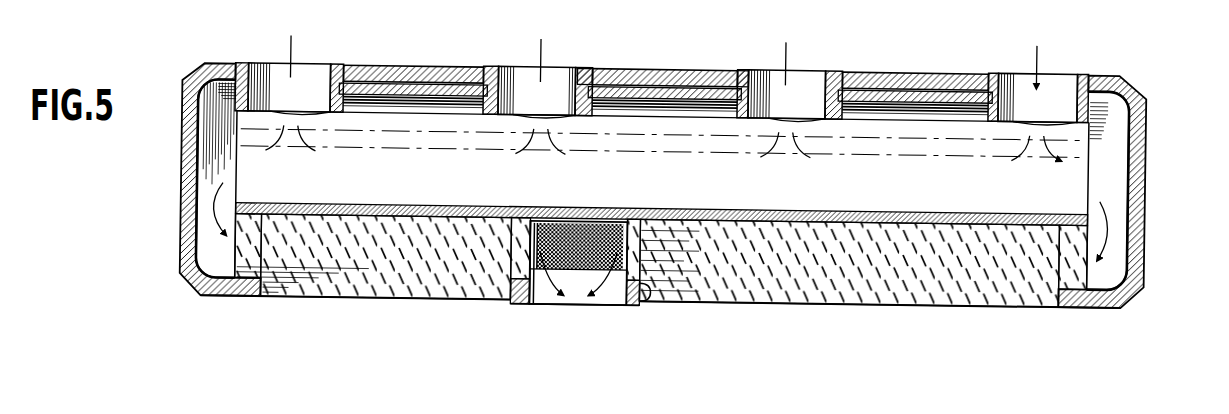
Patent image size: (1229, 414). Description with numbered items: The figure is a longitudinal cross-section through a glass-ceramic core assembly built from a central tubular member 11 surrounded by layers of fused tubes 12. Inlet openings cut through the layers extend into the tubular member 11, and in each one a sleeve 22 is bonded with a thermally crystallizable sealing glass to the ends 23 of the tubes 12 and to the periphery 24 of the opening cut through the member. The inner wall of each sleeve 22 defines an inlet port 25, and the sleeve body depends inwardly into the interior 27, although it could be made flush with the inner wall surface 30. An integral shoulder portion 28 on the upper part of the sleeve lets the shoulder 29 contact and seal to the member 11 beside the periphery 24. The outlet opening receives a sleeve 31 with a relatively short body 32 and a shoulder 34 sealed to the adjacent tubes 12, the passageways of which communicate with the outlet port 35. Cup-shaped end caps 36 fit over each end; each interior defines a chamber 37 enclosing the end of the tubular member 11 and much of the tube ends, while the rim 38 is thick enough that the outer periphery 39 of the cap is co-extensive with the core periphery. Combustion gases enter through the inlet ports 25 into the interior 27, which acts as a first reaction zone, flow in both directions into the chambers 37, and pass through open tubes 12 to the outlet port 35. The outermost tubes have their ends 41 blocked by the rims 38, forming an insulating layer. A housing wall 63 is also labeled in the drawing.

The tubular member 11 is at (423, 99).
The tubes 12 is at (826, 284).
The sleeve 22 is at (243, 69).
The ends of the tubes 23 is at (479, 72).
The periphery of the opening 24 is at (343, 102).
The inlet port 25 is at (315, 77).
The interior of tubular member 27 is at (361, 189).
The shoulder portion 28 is at (588, 80).
The shoulder 29 is at (482, 106).
The inner wall surface 30 is at (1073, 149).
The sleeve 31 is at (588, 305).
The body 32 is at (623, 293).
The shoulder 34 is at (647, 285).
The outlet port 35 is at (552, 291).
The end caps 36 is at (185, 170).
The chamber 37 is at (207, 251).
The rim 38 is at (242, 302).
The outer periphery 39 is at (260, 292).
The ends 41 is at (503, 302).
The housing wall 63 is at (180, 218).